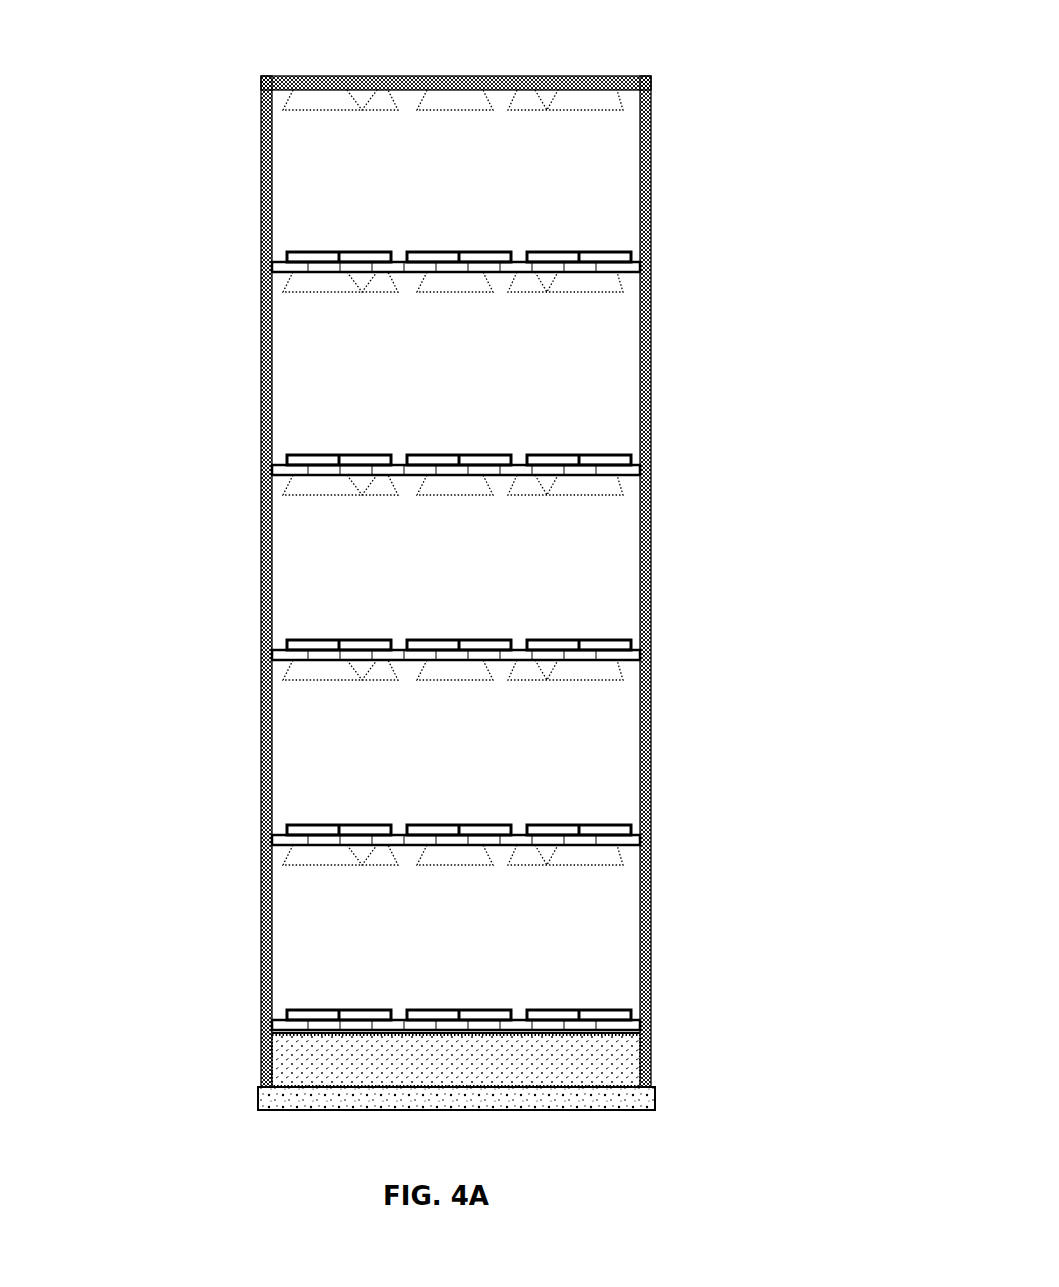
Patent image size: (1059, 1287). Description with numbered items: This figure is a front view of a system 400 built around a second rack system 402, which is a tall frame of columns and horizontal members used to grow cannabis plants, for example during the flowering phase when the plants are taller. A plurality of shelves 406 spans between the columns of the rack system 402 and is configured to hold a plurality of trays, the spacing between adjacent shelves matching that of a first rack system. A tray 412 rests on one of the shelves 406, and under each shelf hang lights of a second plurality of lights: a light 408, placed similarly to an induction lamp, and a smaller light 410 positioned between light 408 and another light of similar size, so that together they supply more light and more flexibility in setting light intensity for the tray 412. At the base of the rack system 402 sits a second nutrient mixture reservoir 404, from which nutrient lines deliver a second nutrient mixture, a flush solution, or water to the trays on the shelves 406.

The system 400 is at (84, 165).
The rack system 402 is at (651, 86).
The second nutrient mixture reservoir 404 is at (630, 1063).
The plurality of shelves 406 is at (632, 270).
The light 408 is at (455, 284).
The light 410 is at (530, 284).
The tray 412 is at (487, 455).